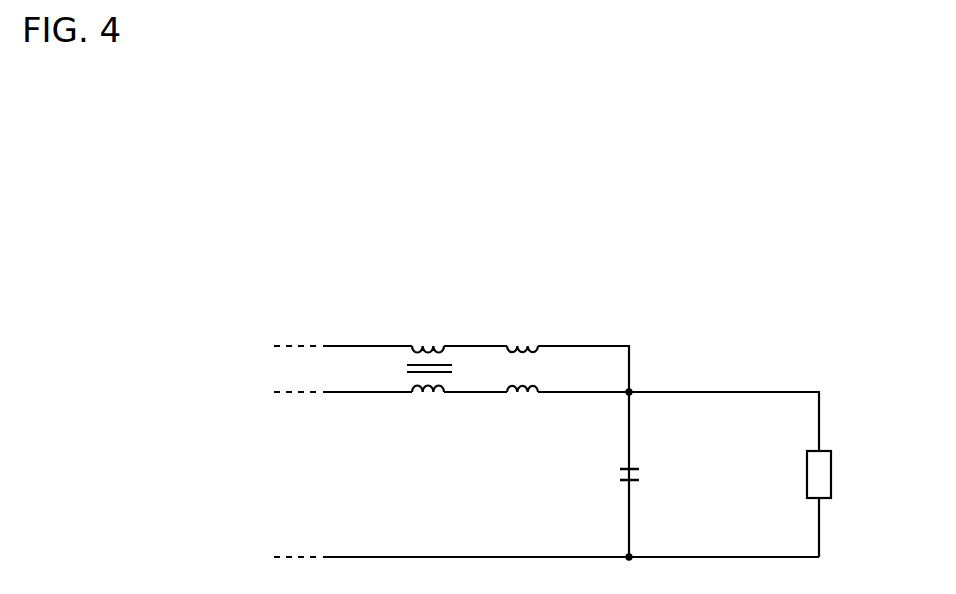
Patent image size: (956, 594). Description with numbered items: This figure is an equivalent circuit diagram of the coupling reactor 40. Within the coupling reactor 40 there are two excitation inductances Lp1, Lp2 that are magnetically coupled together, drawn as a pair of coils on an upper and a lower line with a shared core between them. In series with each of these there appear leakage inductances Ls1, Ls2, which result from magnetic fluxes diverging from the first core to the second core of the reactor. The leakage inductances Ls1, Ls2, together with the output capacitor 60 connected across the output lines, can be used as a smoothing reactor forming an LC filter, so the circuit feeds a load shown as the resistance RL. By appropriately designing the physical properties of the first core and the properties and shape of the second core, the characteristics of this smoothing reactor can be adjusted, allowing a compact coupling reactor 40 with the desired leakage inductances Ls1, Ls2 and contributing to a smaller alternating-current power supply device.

The coupling reactor 40 is at (477, 345).
The excitation inductance Lp1 is at (430, 341).
The leakage inductance Ls1 is at (524, 341).
The excitation inductance Lp2 is at (430, 397).
The leakage inductance Ls2 is at (524, 397).
The output capacitor 60 is at (642, 478).
The load resistor RL is at (834, 475).